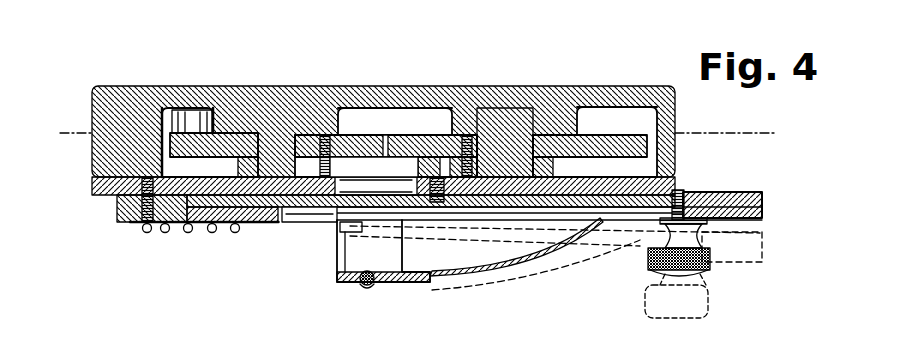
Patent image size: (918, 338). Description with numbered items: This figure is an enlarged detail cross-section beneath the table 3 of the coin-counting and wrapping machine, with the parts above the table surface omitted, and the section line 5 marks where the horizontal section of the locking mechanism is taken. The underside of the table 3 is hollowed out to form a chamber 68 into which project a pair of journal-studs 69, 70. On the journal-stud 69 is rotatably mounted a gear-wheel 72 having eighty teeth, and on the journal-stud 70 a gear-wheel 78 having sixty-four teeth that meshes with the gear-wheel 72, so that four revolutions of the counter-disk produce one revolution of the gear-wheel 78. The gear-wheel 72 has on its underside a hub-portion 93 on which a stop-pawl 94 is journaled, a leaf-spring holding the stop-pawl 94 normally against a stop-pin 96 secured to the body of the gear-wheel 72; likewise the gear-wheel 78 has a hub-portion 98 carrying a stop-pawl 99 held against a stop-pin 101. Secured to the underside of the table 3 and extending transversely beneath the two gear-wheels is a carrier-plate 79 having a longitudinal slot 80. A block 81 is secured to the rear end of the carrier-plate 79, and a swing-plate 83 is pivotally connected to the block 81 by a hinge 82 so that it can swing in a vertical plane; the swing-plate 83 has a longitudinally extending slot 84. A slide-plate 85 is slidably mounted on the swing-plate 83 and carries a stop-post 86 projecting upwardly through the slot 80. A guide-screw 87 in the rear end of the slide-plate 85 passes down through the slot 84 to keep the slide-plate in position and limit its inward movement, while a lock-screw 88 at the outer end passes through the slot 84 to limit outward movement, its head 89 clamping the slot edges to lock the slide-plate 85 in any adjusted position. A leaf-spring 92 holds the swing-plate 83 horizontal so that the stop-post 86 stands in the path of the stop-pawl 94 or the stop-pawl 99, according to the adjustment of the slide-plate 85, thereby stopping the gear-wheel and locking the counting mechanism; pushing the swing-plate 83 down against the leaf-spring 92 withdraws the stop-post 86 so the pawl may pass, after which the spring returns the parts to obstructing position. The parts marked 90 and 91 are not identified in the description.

The table 3 is at (134, 88).
The section line 5 is at (414, 122).
The chamber 68 is at (383, 117).
The journal-stud 69 is at (513, 150).
The journal-stud 70 is at (277, 147).
The gear-wheel 72 is at (422, 130).
The gear-wheel 78 is at (193, 142).
The carrier-plate 79 is at (108, 193).
The longitudinal slot 80 is at (345, 215).
The block 81 is at (125, 220).
The hinge 82 is at (190, 232).
The swing-plate 83 is at (266, 222).
The longitudinally extending slot 84 is at (312, 213).
The slide-plate 85 is at (763, 194).
The stop-post 86 is at (418, 164).
The guide-screw 87 is at (333, 230).
The lock-screw 88 is at (690, 232).
The head 89 is at (708, 264).
The bracket foot 90 is at (390, 258).
The screw 91 is at (380, 276).
The leaf-spring 92 is at (478, 273).
The hub-portion 93 is at (548, 160).
The stop-pawl 94 is at (450, 165).
The stop-pin 96 is at (472, 130).
The hub-portion 98 is at (244, 158).
The stop-pawl 99 is at (360, 158).
The stop-pin 101 is at (325, 155).